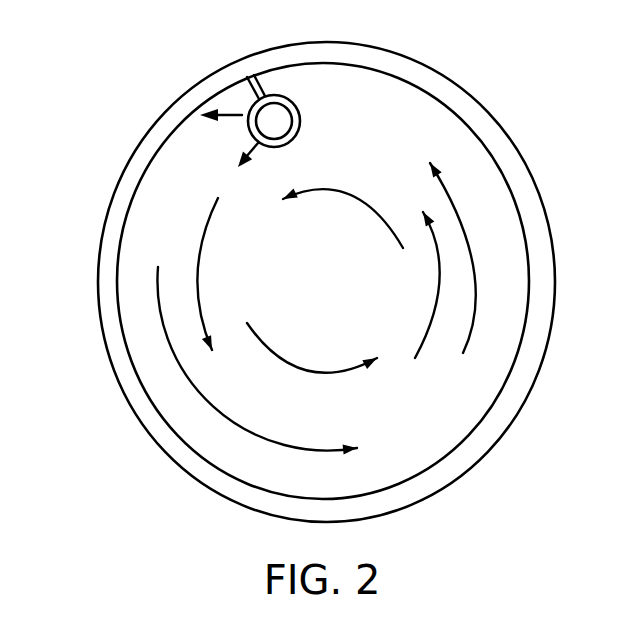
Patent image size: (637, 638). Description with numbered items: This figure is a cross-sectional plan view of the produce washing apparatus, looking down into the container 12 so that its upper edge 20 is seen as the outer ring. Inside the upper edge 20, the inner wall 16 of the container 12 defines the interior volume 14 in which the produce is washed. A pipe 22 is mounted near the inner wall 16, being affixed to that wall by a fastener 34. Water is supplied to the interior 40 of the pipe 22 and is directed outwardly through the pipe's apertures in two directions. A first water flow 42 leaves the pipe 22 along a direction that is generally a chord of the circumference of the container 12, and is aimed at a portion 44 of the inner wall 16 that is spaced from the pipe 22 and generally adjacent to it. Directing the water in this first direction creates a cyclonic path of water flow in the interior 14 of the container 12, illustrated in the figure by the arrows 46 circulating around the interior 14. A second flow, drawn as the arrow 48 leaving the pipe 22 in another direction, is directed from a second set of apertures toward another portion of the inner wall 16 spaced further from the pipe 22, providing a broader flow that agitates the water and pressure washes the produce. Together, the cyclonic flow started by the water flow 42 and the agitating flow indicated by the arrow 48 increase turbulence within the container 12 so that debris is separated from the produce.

The container 12 is at (458, 477).
The inner wall 16 is at (467, 440).
The upper edge 20 is at (463, 103).
The portion of the inner wall 44 is at (145, 180).
The interior volume 14 is at (331, 297).
The arrows illustrating cyclonic path of water flow 46 is at (250, 430).
The pipe 22 is at (301, 116).
The interior of the pipe 40 is at (274, 117).
The fastener 34 is at (262, 80).
The water flow 42 is at (230, 112).
The spray direction 48 is at (240, 168).